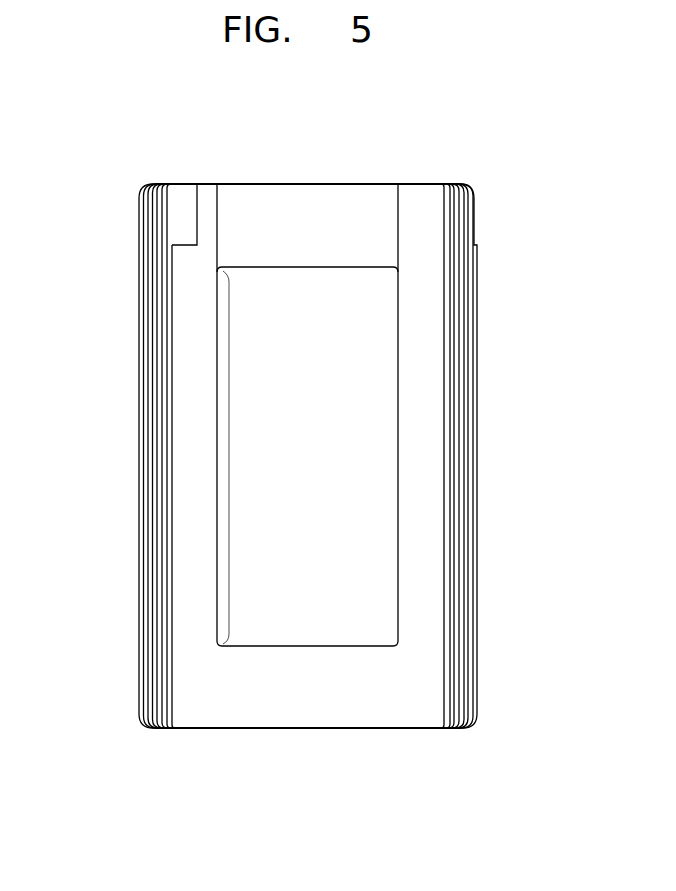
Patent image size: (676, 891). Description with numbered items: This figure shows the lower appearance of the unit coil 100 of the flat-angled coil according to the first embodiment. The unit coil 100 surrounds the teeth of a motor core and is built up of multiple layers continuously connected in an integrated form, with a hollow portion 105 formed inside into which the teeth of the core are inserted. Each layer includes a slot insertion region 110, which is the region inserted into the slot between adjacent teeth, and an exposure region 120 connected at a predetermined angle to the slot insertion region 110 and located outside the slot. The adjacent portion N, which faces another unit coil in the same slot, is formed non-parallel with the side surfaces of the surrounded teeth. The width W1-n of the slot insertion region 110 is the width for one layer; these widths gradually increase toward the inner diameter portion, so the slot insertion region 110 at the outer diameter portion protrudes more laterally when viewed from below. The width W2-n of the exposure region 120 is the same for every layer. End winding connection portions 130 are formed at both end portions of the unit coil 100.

The unit coil 100 is at (102, 113).
The hollow portion 105 is at (370, 385).
The slot insertion region 110 is at (233, 464).
The exposure region 120 is at (437, 171).
The end winding connection portion 130 is at (186, 212).
The adjacent portion N is at (138, 457).
The width of slot insertion region W1-n is at (217, 560).
The width of exposure region W2-n is at (283, 646).